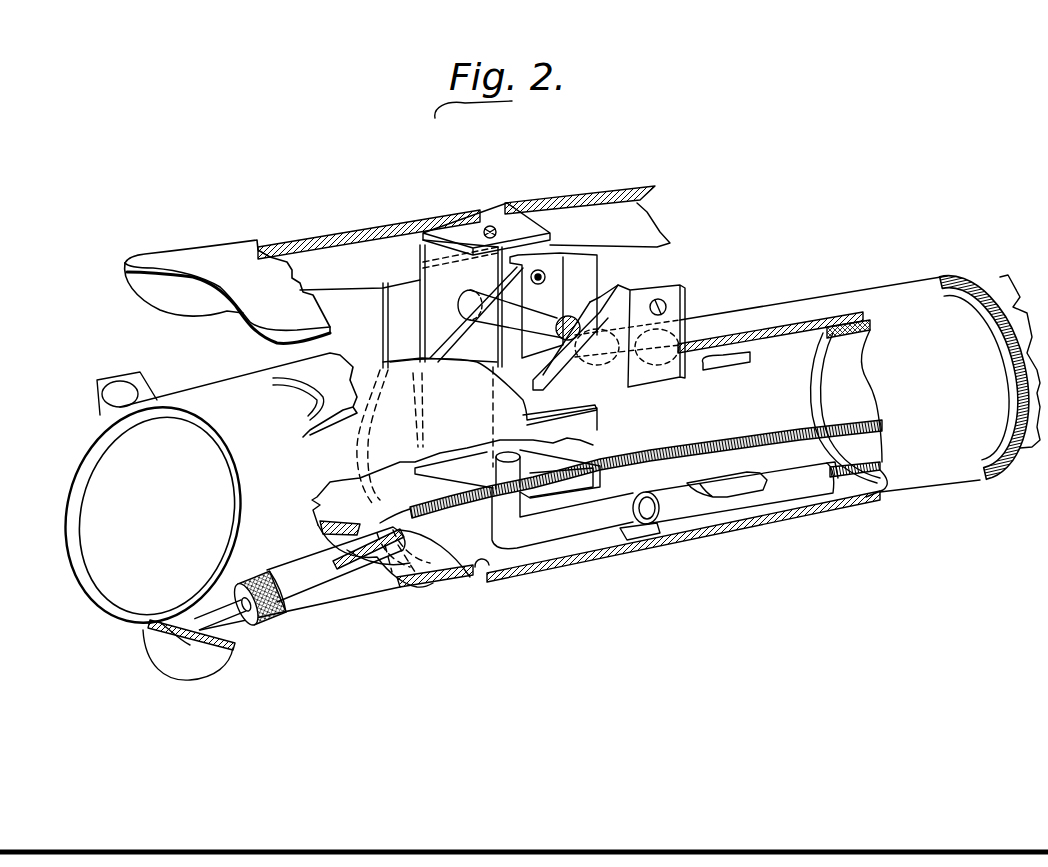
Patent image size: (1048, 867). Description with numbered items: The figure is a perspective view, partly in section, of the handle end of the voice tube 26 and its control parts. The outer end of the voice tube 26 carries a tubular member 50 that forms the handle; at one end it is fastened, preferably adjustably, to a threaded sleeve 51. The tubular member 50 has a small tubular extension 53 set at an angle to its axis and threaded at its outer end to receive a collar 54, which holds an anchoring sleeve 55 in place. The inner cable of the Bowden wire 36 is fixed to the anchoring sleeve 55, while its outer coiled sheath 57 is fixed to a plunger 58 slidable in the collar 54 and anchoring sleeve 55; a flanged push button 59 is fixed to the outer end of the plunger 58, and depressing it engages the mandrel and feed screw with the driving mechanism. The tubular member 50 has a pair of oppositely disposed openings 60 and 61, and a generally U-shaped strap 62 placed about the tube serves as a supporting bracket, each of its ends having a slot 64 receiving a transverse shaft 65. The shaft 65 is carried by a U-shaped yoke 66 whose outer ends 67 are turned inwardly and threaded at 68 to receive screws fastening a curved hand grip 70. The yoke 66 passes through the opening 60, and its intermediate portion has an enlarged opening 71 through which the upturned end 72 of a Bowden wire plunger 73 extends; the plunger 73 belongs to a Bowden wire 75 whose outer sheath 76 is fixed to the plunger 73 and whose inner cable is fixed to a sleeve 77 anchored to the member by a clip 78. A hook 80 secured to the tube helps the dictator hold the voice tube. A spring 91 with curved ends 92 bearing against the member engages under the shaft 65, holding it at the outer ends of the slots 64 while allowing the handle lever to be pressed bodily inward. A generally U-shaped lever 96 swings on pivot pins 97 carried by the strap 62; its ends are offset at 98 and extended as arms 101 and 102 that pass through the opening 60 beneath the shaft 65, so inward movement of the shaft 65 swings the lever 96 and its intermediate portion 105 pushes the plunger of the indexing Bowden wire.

The voice tube 26 is at (997, 273).
The Bowden wire 36 is at (763, 437).
The tubular member 50 is at (740, 323).
The threaded sleeve 51 is at (1020, 448).
The tubular extension 53 is at (307, 580).
The collar 54 is at (257, 617).
The anchoring sleeve 55 is at (300, 553).
The outer coiled sheath 57 is at (652, 457).
The plunger 58 is at (227, 613).
The flanged push button 59 is at (190, 660).
The opening 60 is at (515, 382).
The opening 61 is at (480, 580).
The strap 62 is at (573, 560).
The slot 64 is at (443, 327).
The shaft 65 is at (533, 320).
The U-shaped yoke 66 is at (413, 306).
The outer ends of the yoke 67 is at (478, 232).
The threaded portion 68 is at (490, 230).
The curved hand grip 70 is at (197, 245).
The enlarged opening 71 is at (557, 467).
The upturned end 72 is at (503, 510).
The Bowden wire plunger 73 is at (635, 517).
The Bowden wire 75 is at (840, 487).
The outer sheath 76 is at (868, 463).
The sleeve 77 is at (783, 500).
The clip 78 is at (723, 487).
The hook 80 is at (120, 393).
The spring 91 is at (313, 370).
The curved ends of the spring 92 is at (320, 397).
The U-shaped lever 96 is at (653, 383).
The pivot pins 97 is at (540, 273).
The offset 98 is at (633, 287).
The arm 101 is at (440, 352).
The arm 102 is at (553, 390).
The intermediate portion 105 is at (673, 323).